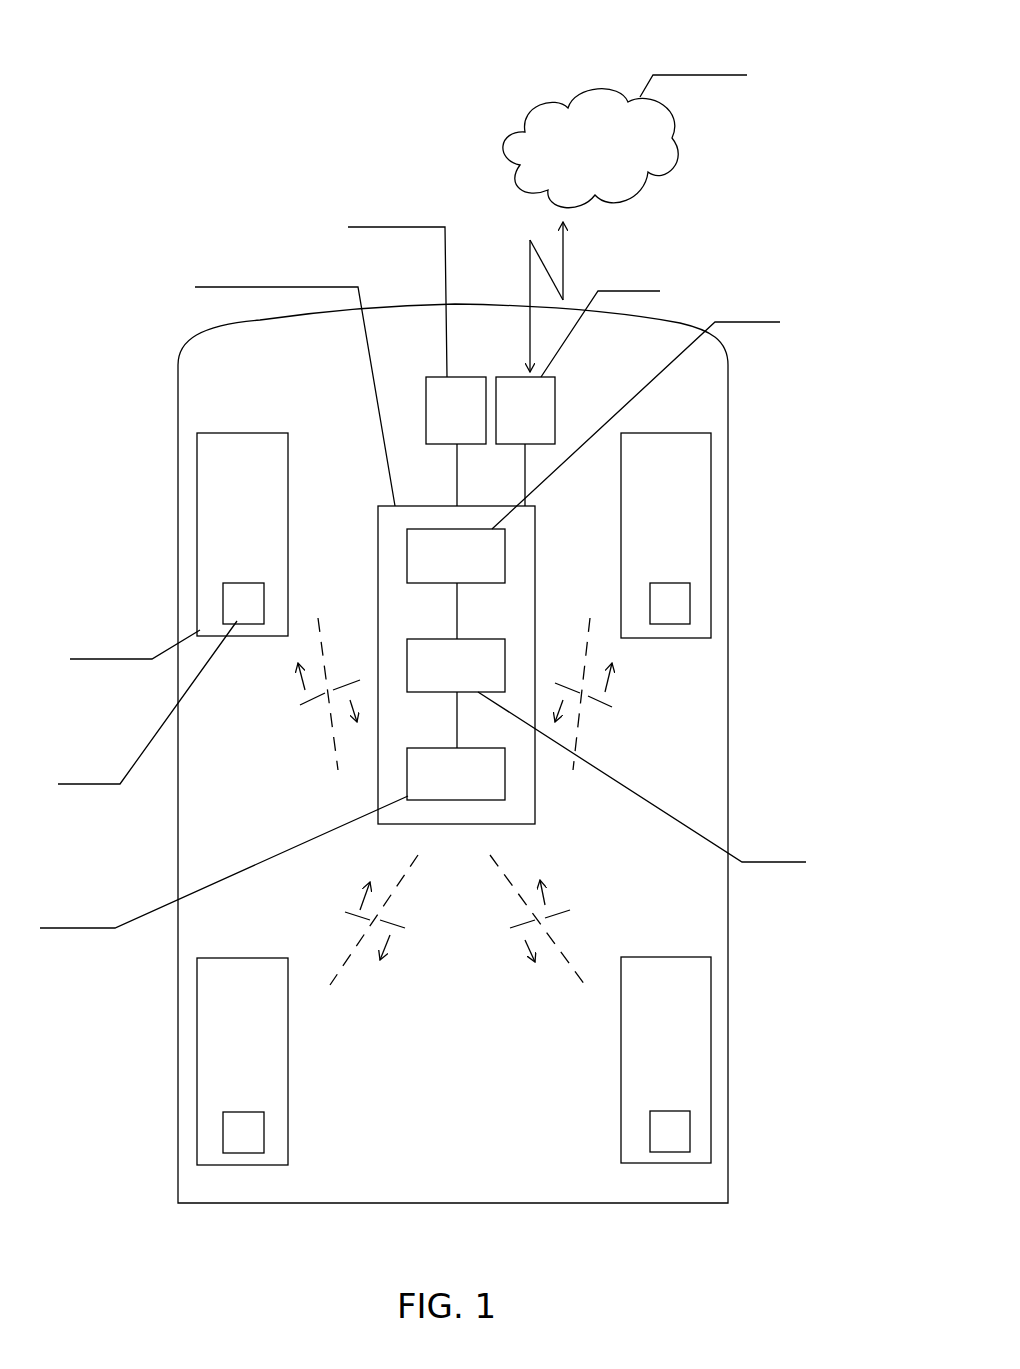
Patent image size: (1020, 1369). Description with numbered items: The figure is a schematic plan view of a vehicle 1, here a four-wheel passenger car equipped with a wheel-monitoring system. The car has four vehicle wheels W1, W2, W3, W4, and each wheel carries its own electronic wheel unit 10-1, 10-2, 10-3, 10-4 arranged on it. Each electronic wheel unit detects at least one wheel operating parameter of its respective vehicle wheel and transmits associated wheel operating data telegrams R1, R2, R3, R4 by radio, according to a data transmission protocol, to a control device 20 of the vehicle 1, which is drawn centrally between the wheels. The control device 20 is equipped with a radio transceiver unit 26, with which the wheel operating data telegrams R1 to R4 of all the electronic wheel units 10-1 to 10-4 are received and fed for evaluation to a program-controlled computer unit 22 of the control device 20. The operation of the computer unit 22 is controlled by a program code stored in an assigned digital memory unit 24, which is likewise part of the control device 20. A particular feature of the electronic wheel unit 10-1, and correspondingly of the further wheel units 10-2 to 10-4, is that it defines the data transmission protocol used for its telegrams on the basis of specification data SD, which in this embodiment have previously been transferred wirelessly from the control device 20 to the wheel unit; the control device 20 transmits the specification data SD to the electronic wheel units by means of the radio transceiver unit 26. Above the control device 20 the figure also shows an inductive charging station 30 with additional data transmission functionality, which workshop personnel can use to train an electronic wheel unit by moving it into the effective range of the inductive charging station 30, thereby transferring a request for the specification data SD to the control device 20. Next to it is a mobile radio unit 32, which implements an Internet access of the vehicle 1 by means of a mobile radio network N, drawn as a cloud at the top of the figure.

The vehicle 1 is at (140, 327).
The electronic wheel unit 10-1 is at (232, 598).
The electronic wheel unit 10-2 is at (682, 597).
The electronic wheel unit 10-3 is at (234, 1128).
The electronic wheel unit 10-4 is at (680, 1128).
The control device 20 is at (383, 580).
The program-controlled computer unit 22 is at (632, 751).
The digital memory unit 24 is at (648, 425).
The radio transceiver unit 26 is at (272, 838).
The inductive charging station 30 is at (417, 322).
The mobile radio unit 32 is at (620, 364).
The vehicle wheel W1 is at (218, 507).
The vehicle wheel W2 is at (690, 512).
The vehicle wheel W3 is at (224, 1026).
The vehicle wheel W4 is at (697, 1022).
The wheel operating data telegram R1 is at (336, 694).
The wheel operating data telegram R2 is at (578, 694).
The wheel operating data telegram R3 is at (359, 920).
The wheel operating data telegram R4 is at (549, 920).
The specification data SD is at (457, 839).
The mobile radio network N is at (651, 112).